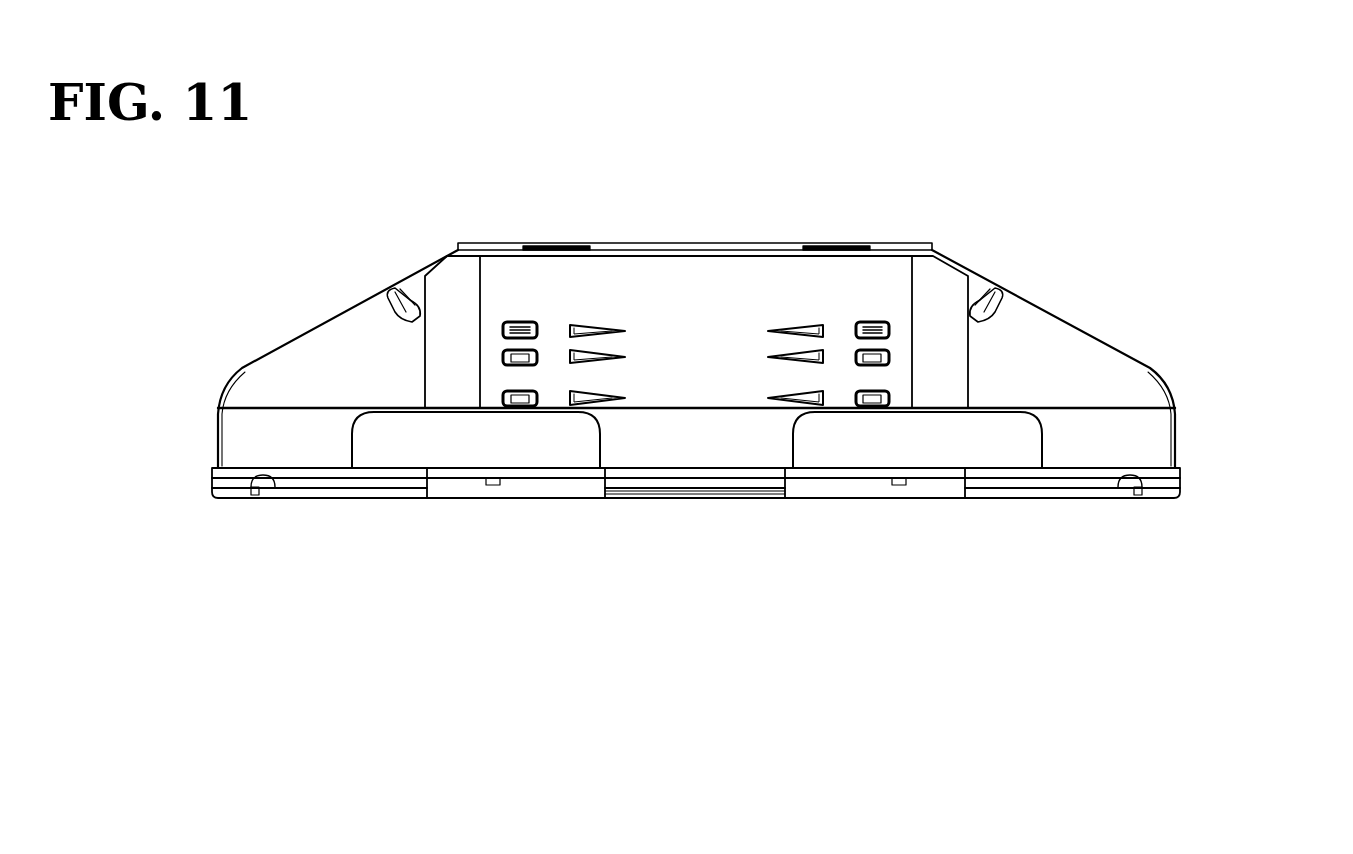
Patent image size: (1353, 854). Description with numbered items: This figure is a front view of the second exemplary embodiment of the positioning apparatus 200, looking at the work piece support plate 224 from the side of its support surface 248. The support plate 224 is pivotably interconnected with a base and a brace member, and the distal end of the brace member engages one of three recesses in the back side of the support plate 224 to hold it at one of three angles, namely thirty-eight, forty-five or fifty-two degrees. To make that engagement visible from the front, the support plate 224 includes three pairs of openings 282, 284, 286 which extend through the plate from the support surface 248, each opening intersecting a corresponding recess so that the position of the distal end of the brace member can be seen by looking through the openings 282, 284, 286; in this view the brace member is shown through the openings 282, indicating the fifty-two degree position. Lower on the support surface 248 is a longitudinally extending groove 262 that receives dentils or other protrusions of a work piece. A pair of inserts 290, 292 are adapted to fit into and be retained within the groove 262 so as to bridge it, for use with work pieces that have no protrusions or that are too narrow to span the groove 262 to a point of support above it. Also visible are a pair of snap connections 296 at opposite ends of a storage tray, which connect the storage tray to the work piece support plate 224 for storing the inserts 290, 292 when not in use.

The positioning apparatus 200 is at (1157, 118).
The work piece support plate 224 is at (265, 385).
The support surface 248 is at (748, 280).
The longitudinally extending groove 262 is at (1130, 445).
The openings 282 is at (518, 322).
The openings 284 is at (533, 357).
The openings 286 is at (503, 398).
The insert 290 is at (970, 452).
The insert 292 is at (422, 452).
The snap connections 296 is at (393, 297).